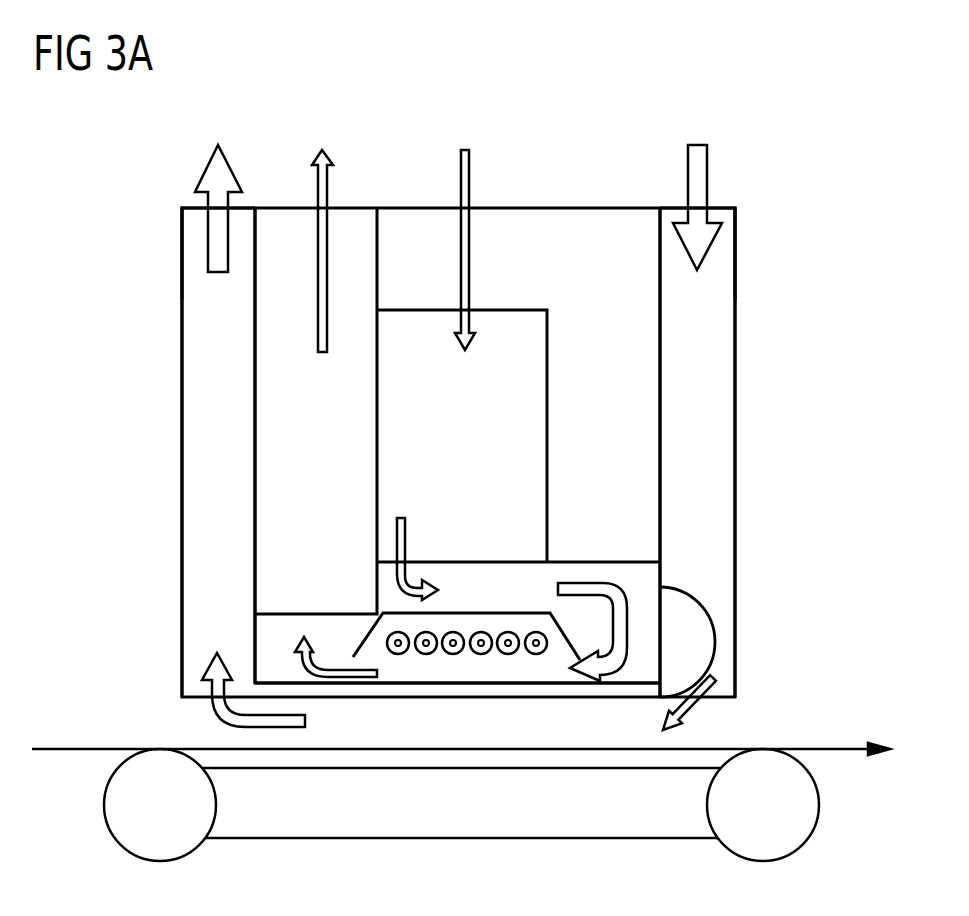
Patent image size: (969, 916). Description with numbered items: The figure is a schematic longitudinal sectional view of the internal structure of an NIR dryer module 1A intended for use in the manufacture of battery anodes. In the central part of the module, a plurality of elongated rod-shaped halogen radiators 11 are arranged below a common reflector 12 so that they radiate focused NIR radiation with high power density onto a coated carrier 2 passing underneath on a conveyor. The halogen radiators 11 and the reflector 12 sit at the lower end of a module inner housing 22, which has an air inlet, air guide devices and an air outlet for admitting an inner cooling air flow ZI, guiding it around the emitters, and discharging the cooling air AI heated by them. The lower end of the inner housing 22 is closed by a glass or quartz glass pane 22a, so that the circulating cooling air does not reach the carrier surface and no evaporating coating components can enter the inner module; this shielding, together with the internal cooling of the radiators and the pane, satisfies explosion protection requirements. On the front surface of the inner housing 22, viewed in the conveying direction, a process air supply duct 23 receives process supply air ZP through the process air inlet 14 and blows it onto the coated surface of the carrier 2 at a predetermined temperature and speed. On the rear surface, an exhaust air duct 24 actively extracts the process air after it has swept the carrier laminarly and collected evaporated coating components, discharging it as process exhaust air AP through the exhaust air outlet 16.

The NIR dryer module 1A is at (485, 442).
The coated carrier 2 is at (75, 748).
The halogen radiators 11 is at (426, 657).
The reflector 12 is at (521, 614).
The process air inlet 14 is at (722, 220).
The exhaust air outlet 16 is at (192, 215).
The module inner housing 22 is at (510, 190).
The glass pane 22a is at (553, 690).
The process air supply duct 23 is at (722, 422).
The exhaust air duct 24 is at (192, 437).
The process exhaust air AP is at (208, 200).
The heated cooling air AI is at (318, 180).
The inner cooling air flow ZI is at (461, 180).
The process supply air ZP is at (688, 180).